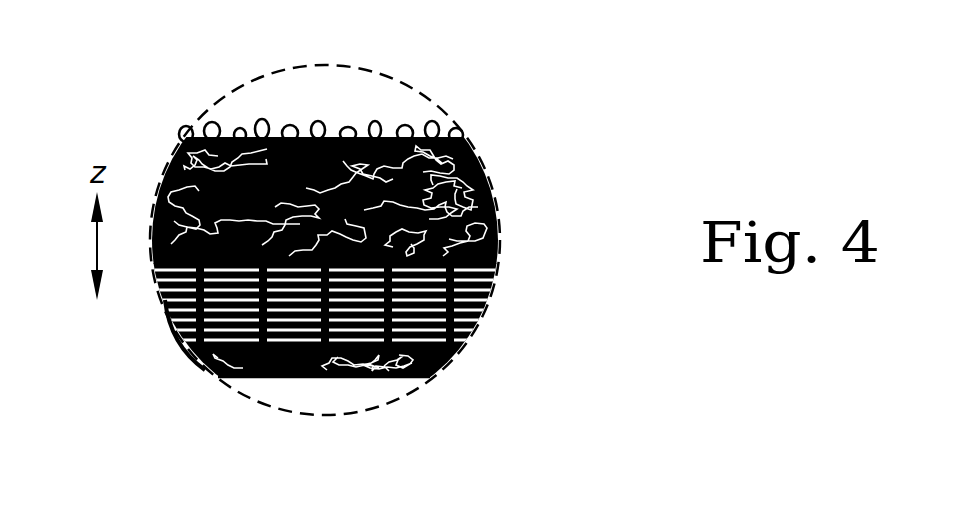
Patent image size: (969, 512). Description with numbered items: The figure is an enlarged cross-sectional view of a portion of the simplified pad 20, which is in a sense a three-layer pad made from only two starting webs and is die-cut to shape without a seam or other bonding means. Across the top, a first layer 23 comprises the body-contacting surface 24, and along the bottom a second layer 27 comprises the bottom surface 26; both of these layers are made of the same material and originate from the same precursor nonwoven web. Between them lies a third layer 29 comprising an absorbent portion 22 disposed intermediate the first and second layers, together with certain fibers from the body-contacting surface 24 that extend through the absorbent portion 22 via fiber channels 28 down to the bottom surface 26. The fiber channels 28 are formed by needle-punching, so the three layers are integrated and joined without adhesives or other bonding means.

The pad 20 is at (372, 102).
The absorbent portion 22 is at (477, 305).
The first layer 23 is at (492, 180).
The body-contacting surface 24 is at (260, 137).
The bottom surface 26 is at (327, 380).
The second layer 27 is at (450, 363).
The fiber channels 28 is at (500, 257).
The third layer 29 is at (170, 330).